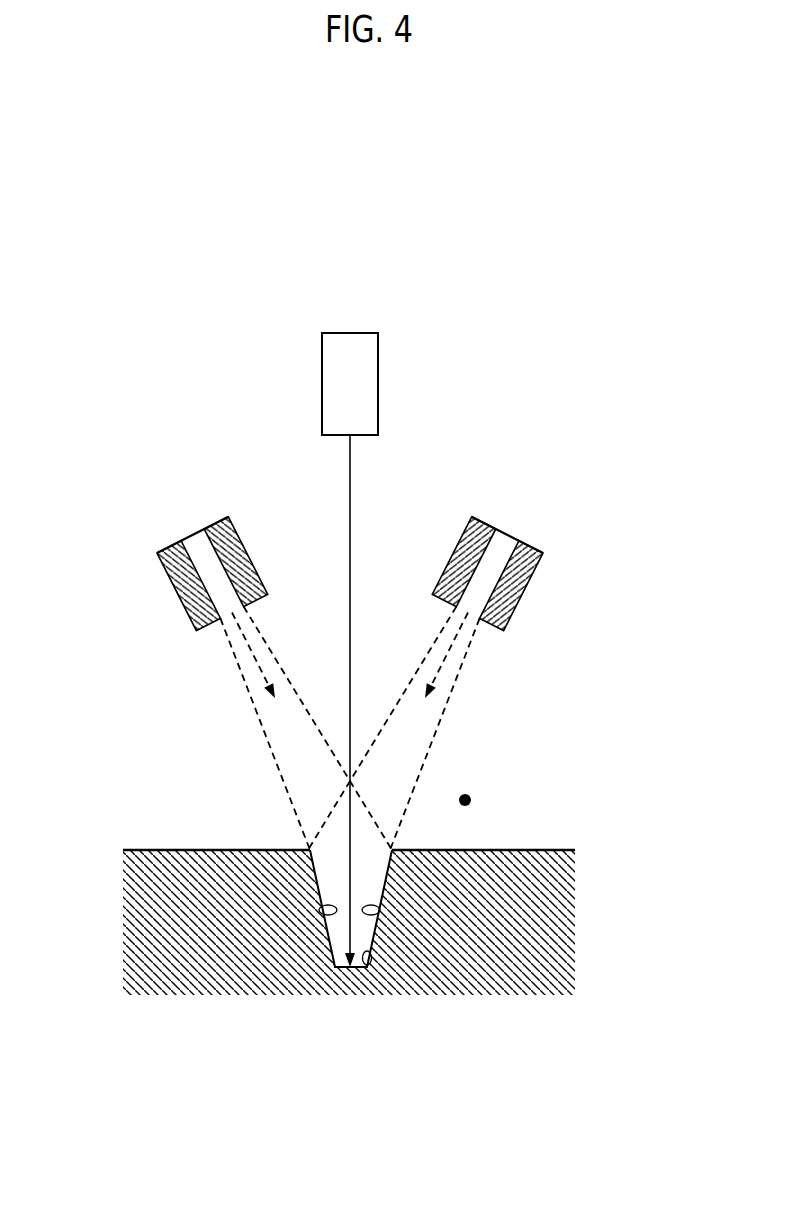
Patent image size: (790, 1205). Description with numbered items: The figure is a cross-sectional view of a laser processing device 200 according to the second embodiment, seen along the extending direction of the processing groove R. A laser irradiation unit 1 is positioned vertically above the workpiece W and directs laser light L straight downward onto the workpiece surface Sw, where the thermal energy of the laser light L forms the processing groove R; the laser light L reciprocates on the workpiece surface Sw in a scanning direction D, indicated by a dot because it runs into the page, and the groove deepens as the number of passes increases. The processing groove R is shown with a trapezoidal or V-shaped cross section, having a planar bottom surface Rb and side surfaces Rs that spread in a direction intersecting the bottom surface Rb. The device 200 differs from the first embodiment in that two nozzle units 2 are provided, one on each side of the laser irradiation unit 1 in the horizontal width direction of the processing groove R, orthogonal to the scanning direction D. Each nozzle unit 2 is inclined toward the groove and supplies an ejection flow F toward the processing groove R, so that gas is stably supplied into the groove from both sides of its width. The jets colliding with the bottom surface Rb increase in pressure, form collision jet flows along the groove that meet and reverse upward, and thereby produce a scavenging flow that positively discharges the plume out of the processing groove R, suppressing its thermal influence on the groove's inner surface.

The laser processing device 200 is at (182, 374).
The laser irradiation unit 1 is at (378, 383).
The laser light L is at (352, 512).
The nozzle unit 2 is at (152, 552).
The ejection flow F is at (250, 712).
The scanning direction D is at (475, 800).
The workpiece W is at (553, 1022).
The workpiece surface Sw is at (543, 851).
The processing groove R is at (406, 984).
The side surface Rs is at (320, 910).
The bottom surface Rb is at (369, 965).